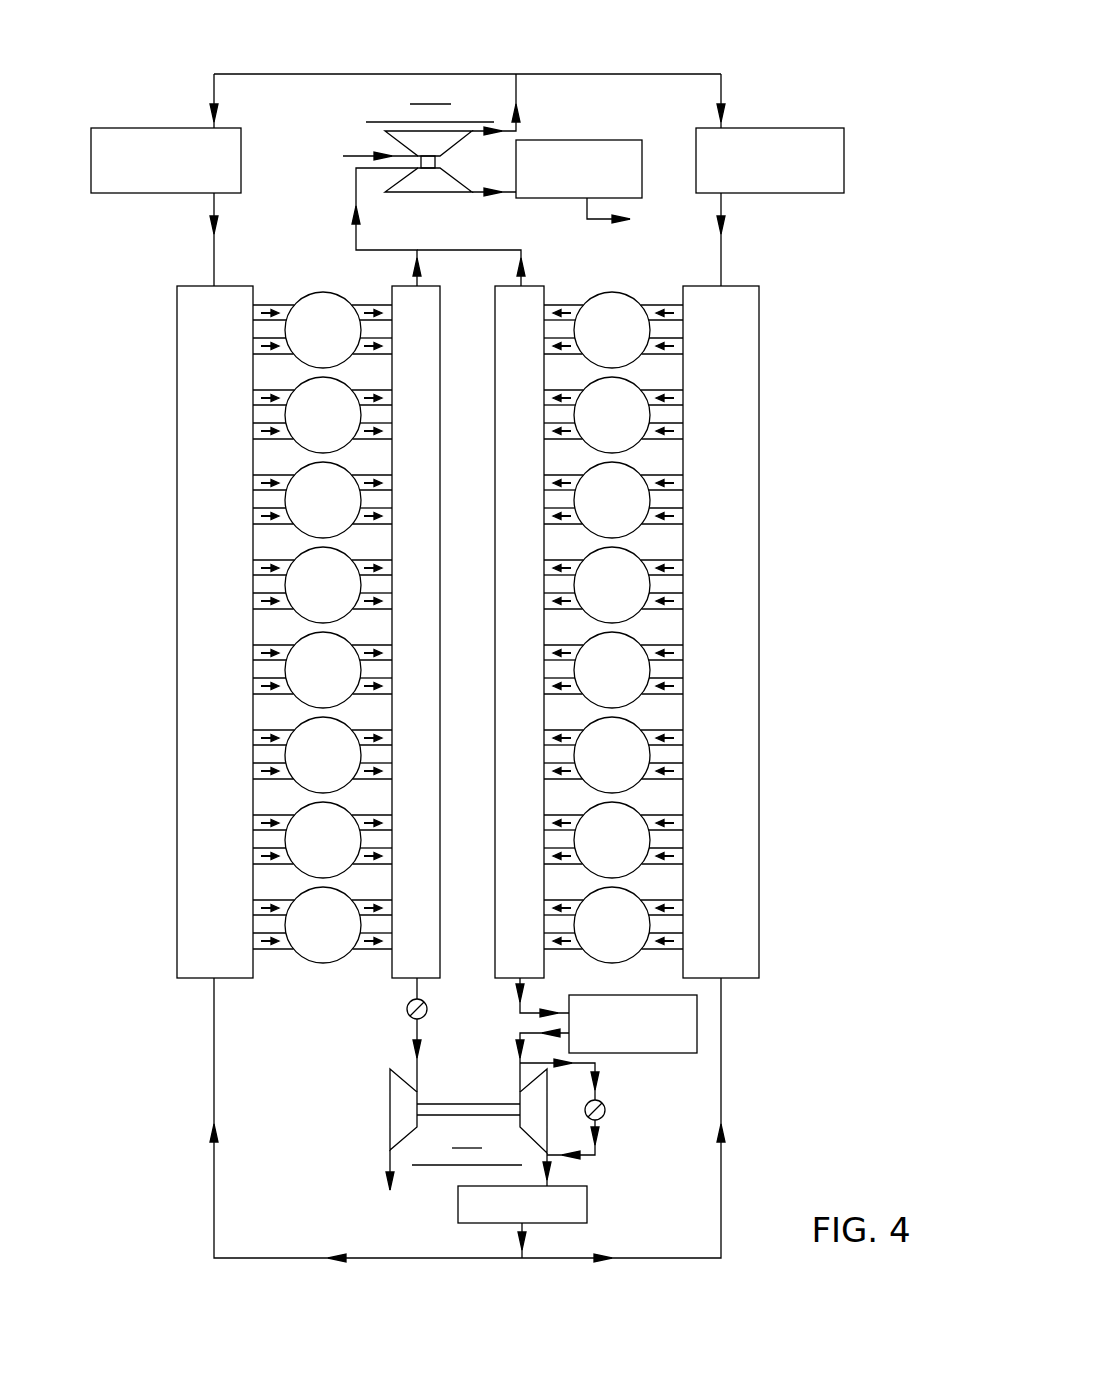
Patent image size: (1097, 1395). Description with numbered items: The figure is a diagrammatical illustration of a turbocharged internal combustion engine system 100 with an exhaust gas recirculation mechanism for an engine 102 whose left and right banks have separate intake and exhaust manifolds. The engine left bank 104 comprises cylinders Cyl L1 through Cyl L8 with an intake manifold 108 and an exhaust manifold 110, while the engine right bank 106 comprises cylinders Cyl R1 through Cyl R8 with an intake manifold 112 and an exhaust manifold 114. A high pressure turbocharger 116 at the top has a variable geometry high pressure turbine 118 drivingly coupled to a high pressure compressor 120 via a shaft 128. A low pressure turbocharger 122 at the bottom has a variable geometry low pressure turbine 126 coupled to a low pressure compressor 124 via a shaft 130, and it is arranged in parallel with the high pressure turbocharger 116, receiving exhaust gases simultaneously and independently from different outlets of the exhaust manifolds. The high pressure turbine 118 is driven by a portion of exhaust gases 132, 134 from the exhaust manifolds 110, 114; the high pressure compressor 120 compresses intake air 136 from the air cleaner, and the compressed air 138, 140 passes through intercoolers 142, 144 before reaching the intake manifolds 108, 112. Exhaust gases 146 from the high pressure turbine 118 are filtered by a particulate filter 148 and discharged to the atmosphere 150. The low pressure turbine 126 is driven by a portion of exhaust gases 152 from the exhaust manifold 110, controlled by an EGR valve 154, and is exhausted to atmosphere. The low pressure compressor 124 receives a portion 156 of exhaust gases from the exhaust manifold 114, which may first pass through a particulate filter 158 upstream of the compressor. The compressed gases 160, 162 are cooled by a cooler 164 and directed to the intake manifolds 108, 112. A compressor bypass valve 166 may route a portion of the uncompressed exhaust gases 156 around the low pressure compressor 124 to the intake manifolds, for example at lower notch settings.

The turbocharged internal combustion engine system 100 is at (822, 46).
The engine 102 is at (792, 365).
The engine left bank 104 is at (152, 904).
The engine right bank 106 is at (792, 890).
The intake manifold 108 is at (185, 615).
The exhaust manifold 110 is at (425, 867).
The intake manifold 112 is at (754, 632).
The exhaust manifold 114 is at (513, 385).
The high pressure turbocharger 116 is at (466, 103).
The variable geometry high pressure turbine 118 is at (428, 193).
The high pressure compressor 120 is at (385, 142).
The low pressure turbocharger 122 is at (432, 1187).
The low pressure compressor 124 is at (548, 1102).
The variable geometry low pressure turbine 126 is at (388, 1110).
The shaft 128 is at (440, 162).
The shaft 130 is at (480, 1103).
The exhaust gases 132 is at (412, 280).
The exhaust gases 134 is at (516, 280).
The intake air 136 is at (356, 172).
The compressed air 138 is at (292, 74).
The compressed air 140 is at (602, 74).
The intercooler 142 is at (125, 127).
The intercooler 144 is at (845, 160).
The exhaust gases 146 is at (492, 203).
The particulate filter 148 is at (575, 140).
The discharge to atmosphere 150 is at (600, 217).
The exhaust gases 152 is at (420, 1078).
The EGR valve 154 is at (428, 1011).
The portion of exhaust gases 156 is at (540, 995).
The particulate filter 158 is at (697, 1025).
The compressed gases 160 is at (214, 1090).
The compressed gases 162 is at (720, 1175).
The cooler 164 is at (587, 1205).
The compressor bypass valve 166 is at (600, 1081).